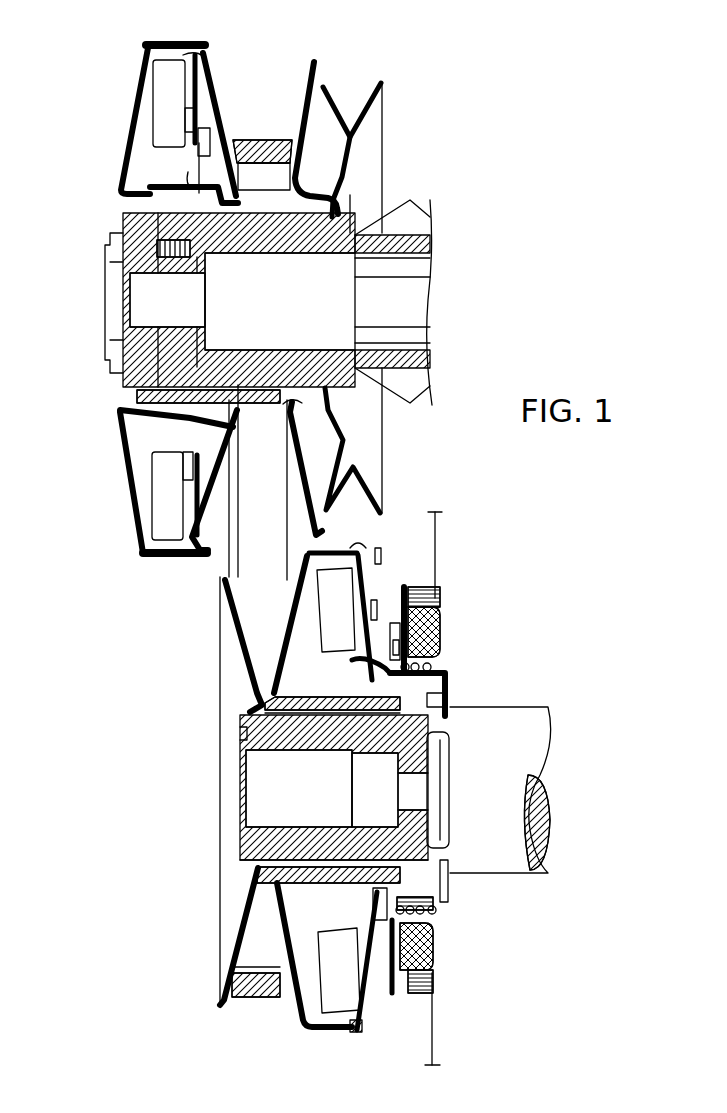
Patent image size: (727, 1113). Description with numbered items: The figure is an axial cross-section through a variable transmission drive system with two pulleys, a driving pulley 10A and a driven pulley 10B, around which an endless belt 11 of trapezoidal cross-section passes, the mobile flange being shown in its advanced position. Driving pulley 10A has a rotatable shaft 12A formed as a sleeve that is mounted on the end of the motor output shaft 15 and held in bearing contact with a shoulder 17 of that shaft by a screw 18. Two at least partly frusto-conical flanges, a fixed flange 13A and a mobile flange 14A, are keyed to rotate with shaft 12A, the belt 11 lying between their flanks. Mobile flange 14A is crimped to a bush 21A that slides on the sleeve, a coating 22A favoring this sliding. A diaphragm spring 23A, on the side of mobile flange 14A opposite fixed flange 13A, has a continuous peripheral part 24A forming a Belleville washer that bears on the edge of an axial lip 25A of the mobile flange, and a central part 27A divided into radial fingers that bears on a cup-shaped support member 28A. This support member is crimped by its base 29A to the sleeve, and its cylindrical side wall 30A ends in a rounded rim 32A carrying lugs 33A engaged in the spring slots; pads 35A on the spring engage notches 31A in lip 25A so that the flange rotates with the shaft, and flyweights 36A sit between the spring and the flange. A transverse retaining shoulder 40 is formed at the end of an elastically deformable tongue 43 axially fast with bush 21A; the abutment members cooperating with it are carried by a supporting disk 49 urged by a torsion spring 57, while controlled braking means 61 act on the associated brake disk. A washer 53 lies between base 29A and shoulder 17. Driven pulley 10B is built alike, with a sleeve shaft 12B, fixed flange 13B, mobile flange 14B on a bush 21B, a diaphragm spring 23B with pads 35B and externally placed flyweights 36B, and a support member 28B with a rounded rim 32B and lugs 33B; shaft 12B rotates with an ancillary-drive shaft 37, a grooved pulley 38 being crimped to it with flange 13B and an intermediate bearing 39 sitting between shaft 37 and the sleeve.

The driving pulley 10A is at (158, 896).
The driven pulley 10B is at (445, 108).
The belt 11 is at (265, 138).
The rotatable shaft 12A is at (230, 740).
The shaft 12B is at (105, 226).
The fixed flange 13A is at (228, 610).
The fixed flange 13B is at (307, 66).
The mobile flange 14A is at (298, 1020).
The mobile flange 14B is at (225, 96).
The output shaft 15 is at (480, 751).
The shoulder 17 is at (450, 790).
The screw 18 is at (359, 807).
The bush 21A is at (298, 694).
The bush 21B is at (150, 186).
The coating 22A is at (278, 717).
The diaphragm spring 23A is at (375, 573).
The diaphragm spring 23B is at (183, 70).
The peripheral part 24A is at (378, 572).
The axial lip 25A is at (320, 1038).
The central part 27A is at (366, 632).
The support member 28A is at (363, 740).
The support member 28B is at (137, 424).
The base 29A is at (448, 700).
The cylindrical side wall 30A is at (375, 790).
The notches 31A is at (352, 1022).
The rounded rim 32A is at (378, 903).
The rounded rim 32B is at (219, 185).
The lugs 33A is at (362, 658).
The lugs 33B is at (207, 430).
The pads 35A is at (368, 995).
The pads 35B is at (200, 72).
The flyweights 36A is at (322, 578).
The flyweights 36B is at (157, 106).
The shaft 37 is at (268, 309).
The grooved pulley 38 is at (385, 100).
The intermediate bearing 39 is at (415, 244).
The transverse retaining shoulder 40 is at (372, 880).
The elastically deformable tongue 43 is at (370, 866).
The supporting disk 49 is at (392, 625).
The washer 53 is at (448, 906).
The torsion spring 57 is at (436, 664).
The controlled braking means 61 is at (455, 955).